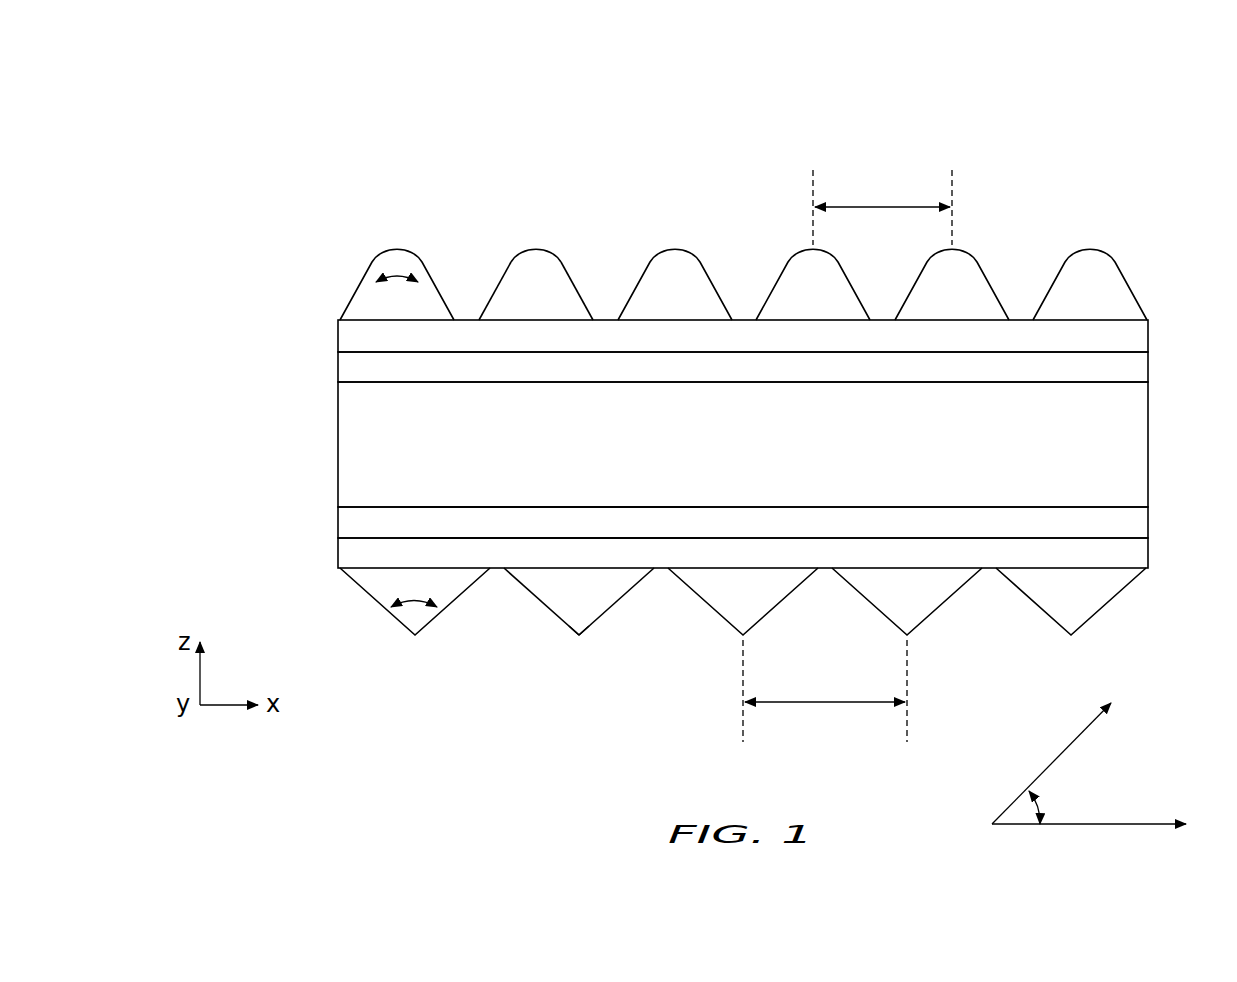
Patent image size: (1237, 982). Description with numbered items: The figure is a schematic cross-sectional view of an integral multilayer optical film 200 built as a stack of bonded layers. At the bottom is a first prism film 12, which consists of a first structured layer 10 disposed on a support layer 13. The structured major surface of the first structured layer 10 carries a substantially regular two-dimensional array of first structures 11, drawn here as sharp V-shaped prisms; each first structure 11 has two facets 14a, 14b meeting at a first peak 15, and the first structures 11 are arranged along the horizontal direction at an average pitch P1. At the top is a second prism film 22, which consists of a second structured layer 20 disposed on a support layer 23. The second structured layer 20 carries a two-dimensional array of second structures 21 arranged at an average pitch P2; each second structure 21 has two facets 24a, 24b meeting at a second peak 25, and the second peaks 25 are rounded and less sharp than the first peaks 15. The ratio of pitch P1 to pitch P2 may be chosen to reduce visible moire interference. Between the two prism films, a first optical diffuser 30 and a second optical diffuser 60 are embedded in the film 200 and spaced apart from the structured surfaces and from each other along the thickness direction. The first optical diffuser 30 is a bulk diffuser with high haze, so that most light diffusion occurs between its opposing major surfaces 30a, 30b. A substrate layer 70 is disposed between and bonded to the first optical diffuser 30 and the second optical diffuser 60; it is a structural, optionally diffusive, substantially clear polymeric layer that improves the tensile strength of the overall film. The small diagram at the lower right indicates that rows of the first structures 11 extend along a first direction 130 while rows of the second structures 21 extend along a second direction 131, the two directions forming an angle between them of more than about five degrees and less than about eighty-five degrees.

The multilayer optical film 200 is at (303, 118).
The second prism film 22 is at (1167, 243).
The second structured layer 20 is at (351, 298).
The second structure 21 is at (380, 262).
The facet of second structure 24a is at (497, 275).
The facet of second structure 24b is at (580, 275).
The second peak 25 is at (536, 250).
The support layer 23 is at (352, 338).
The second optical diffuser 60 is at (352, 370).
The substrate layer 70 is at (352, 448).
The diffuser layer 30 is at (348, 523).
The major surface of bulk diffuser 30a is at (615, 538).
The major surface of bulk diffuser 30b is at (537, 507).
The first prism film 12 is at (1167, 530).
The support layer 13 is at (352, 550).
The first structured layer 10 is at (360, 586).
The first structure 11 is at (412, 622).
The facet of first structure 14a is at (535, 597).
The facet of first structure 14b is at (612, 607).
The first peak 15 is at (579, 640).
The average pitch of first structures P1 is at (825, 691).
The average pitch of second structures P2 is at (882, 207).
The first direction 130 is at (1148, 823).
The second direction 131 is at (1083, 730).